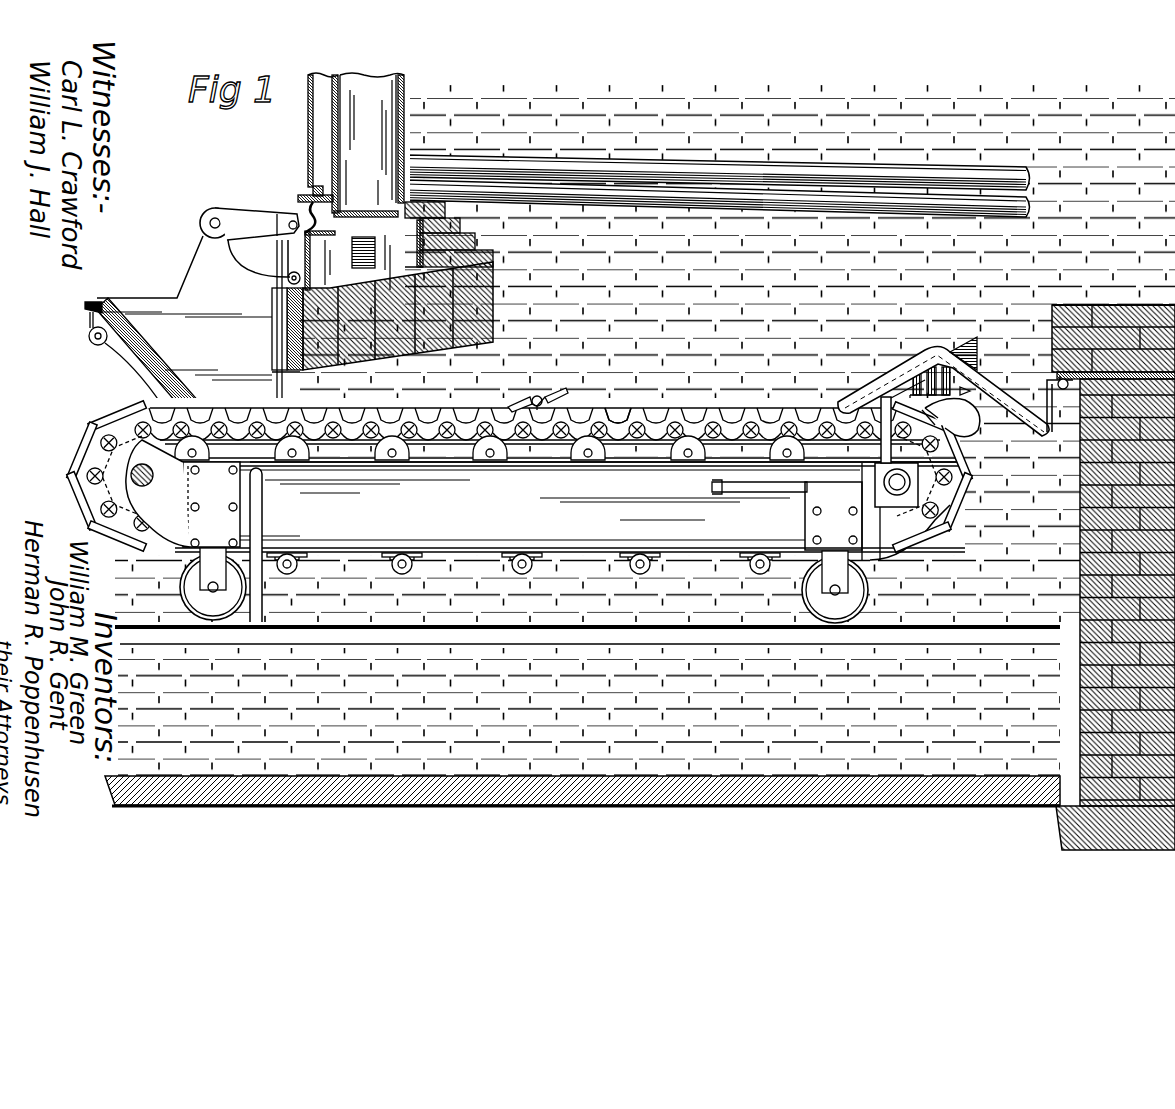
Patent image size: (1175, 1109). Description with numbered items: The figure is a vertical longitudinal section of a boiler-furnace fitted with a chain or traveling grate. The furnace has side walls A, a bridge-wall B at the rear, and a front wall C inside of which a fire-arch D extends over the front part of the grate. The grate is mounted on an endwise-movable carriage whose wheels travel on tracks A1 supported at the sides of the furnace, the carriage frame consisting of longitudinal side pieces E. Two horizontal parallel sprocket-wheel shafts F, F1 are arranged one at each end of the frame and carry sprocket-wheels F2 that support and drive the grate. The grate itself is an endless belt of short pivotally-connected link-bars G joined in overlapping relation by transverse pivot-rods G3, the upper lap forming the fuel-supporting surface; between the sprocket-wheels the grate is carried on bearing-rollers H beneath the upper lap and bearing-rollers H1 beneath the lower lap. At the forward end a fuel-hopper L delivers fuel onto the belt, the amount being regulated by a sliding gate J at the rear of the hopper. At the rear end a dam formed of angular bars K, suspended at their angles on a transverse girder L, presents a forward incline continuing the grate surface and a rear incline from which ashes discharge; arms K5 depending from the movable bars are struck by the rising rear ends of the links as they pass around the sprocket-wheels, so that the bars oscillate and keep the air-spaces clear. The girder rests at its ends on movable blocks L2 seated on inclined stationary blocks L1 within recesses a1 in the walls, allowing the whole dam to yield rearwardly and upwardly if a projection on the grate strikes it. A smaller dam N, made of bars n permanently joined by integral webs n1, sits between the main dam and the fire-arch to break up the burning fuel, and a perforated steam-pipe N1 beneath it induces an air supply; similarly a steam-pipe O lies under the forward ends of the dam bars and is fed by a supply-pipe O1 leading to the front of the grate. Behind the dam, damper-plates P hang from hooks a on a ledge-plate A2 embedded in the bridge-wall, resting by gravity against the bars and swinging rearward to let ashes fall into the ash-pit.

The side walls A is at (645, 353).
The tracks A1 is at (975, 640).
The ledge-plate A2 is at (1072, 373).
The bridge-wall B is at (1154, 305).
The hooks a is at (1114, 395).
The recesses a1 is at (962, 341).
The front wall C is at (344, 180).
The fire-arch D is at (390, 286).
The longitudinal side pieces E is at (570, 508).
The sprocket-wheel shaft F is at (158, 493).
The sprocket-wheel shaft F1 is at (921, 481).
The sprocket-wheels F2 is at (97, 476).
The link-bars G is at (630, 410).
The transverse pivot-rods G3 is at (601, 417).
The bearing-rollers H is at (448, 442).
The bearing-rollers H1 is at (608, 562).
The sliding gate J is at (266, 356).
The dam bar K is at (990, 388).
The arm K5 is at (965, 425).
The girder L is at (537, 319).
The stationary block L1 is at (958, 425).
The movable block L2 is at (906, 380).
The smaller dam N is at (540, 397).
The steam-pipe N1 is at (560, 428).
The bars n is at (506, 400).
The integral webs n1 is at (529, 396).
The steam-pipe O is at (886, 396).
The supply-pipe O1 is at (531, 470).
The damper-plates P is at (1048, 433).